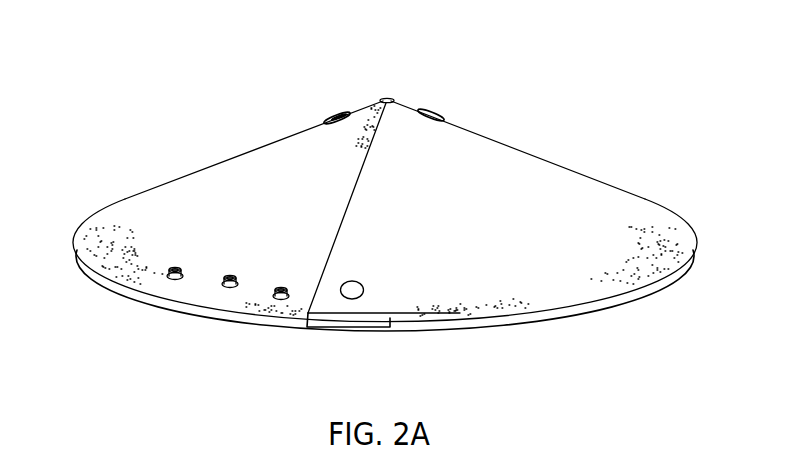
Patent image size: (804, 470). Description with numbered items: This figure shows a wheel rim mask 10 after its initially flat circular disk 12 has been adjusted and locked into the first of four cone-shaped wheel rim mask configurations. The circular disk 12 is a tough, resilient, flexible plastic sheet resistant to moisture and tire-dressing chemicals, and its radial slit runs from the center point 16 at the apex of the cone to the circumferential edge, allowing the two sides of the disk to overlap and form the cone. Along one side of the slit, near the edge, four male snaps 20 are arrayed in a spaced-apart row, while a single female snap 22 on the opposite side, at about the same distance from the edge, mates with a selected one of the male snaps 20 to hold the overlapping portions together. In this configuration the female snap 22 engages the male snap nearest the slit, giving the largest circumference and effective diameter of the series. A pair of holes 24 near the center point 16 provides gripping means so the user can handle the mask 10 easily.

The wheel rim mask 10 is at (224, 95).
The circular disk 12 is at (570, 180).
The center point 16 is at (390, 98).
The male snaps 20 is at (273, 291).
The female snap 22 is at (357, 297).
The pair of holes 24 is at (333, 117).